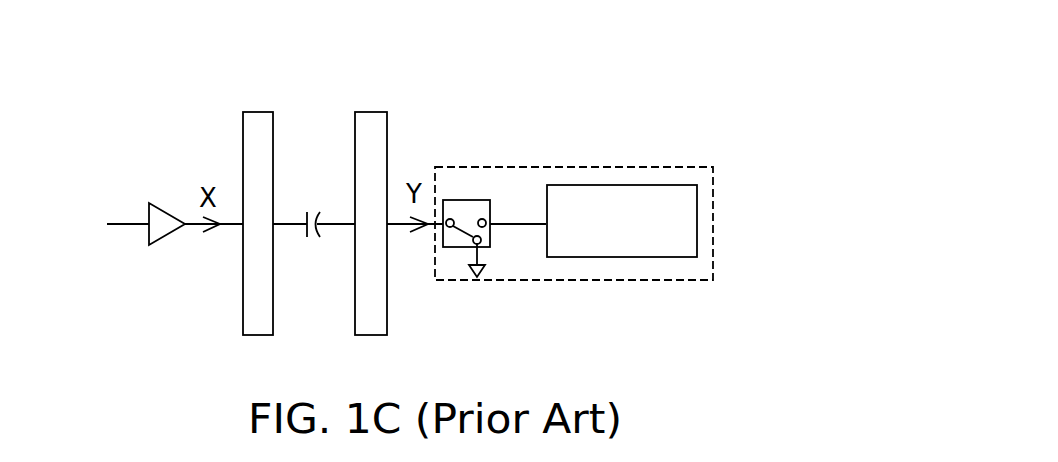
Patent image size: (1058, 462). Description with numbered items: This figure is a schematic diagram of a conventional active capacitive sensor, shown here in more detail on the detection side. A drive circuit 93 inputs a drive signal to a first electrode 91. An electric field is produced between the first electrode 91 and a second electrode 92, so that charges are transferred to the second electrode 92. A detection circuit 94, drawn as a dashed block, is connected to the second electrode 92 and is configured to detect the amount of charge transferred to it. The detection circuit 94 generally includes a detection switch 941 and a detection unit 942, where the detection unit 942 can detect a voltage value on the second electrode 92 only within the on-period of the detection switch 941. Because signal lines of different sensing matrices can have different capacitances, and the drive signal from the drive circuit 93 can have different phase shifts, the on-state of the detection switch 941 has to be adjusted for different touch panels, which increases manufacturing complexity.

The first electrode 91 is at (257, 110).
The second electrode 92 is at (377, 110).
The drive circuit 93 is at (162, 205).
The detection circuit 94 is at (692, 167).
The detection switch 941 is at (473, 200).
The detection unit 942 is at (627, 185).